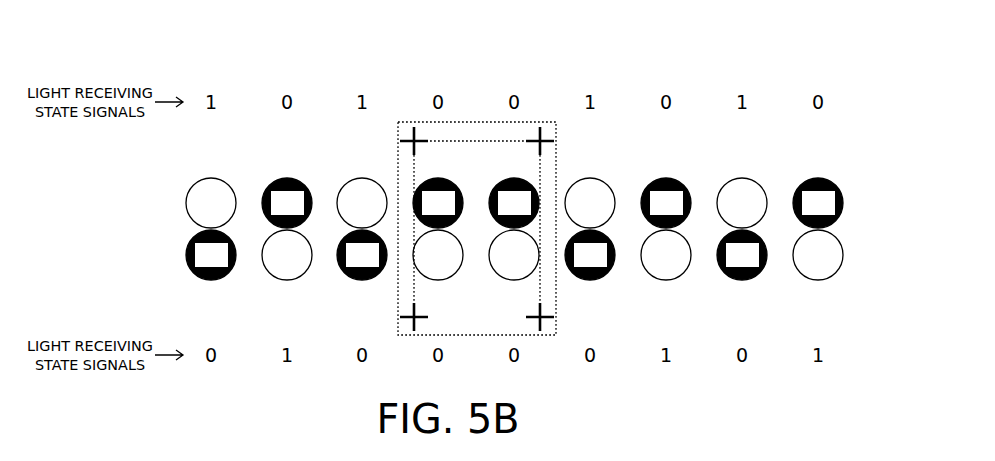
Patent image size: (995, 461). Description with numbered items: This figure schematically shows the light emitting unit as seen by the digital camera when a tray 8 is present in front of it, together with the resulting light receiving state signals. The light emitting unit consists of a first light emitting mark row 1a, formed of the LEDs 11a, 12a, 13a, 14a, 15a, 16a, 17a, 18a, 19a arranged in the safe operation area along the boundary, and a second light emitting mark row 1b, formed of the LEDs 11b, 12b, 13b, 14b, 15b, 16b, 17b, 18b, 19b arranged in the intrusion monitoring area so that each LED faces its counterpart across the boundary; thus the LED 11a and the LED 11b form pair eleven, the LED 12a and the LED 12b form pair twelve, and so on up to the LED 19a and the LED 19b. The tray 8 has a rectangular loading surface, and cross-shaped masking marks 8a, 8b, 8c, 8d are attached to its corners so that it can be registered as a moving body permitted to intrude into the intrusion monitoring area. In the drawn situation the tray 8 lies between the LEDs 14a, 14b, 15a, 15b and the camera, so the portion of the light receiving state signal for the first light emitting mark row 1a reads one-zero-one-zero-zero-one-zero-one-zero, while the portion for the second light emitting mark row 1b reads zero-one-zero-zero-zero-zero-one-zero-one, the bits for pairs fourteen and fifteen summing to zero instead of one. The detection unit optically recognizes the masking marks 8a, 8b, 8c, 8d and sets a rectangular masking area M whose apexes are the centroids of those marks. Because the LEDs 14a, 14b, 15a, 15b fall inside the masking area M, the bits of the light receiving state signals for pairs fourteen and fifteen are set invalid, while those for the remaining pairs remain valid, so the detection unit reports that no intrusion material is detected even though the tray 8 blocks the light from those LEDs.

The first light emitting mark row 1a is at (480, 203).
The second light emitting mark row 1b is at (480, 255).
The tray 8 is at (557, 186).
The masking mark 8a is at (553, 317).
The masking mark 8b is at (401, 317).
The masking mark 8c is at (401, 140).
The masking mark 8d is at (553, 141).
The masking area M is at (474, 140).
The LED 11a is at (211, 203).
The LED 11b is at (211, 255).
The LED 12a is at (287, 203).
The LED 12b is at (287, 255).
The LED 13a is at (362, 203).
The LED 13b is at (362, 255).
The LED 14a is at (438, 203).
The LED 14b is at (438, 255).
The LED 15a is at (514, 203).
The LED 15b is at (514, 255).
The LED 16a is at (590, 203).
The LED 16b is at (590, 255).
The LED 17a is at (666, 203).
The LED 17b is at (666, 255).
The LED 18a is at (742, 203).
The LED 18b is at (742, 255).
The LED 19a is at (818, 203).
The LED 19b is at (818, 255).